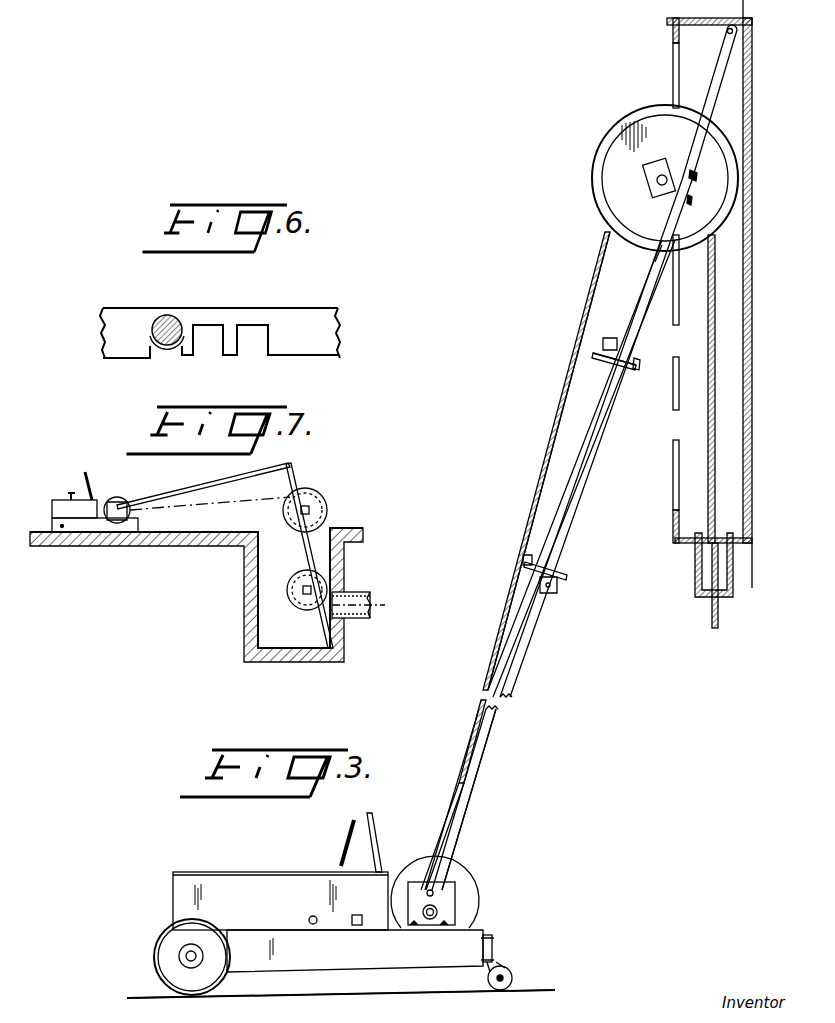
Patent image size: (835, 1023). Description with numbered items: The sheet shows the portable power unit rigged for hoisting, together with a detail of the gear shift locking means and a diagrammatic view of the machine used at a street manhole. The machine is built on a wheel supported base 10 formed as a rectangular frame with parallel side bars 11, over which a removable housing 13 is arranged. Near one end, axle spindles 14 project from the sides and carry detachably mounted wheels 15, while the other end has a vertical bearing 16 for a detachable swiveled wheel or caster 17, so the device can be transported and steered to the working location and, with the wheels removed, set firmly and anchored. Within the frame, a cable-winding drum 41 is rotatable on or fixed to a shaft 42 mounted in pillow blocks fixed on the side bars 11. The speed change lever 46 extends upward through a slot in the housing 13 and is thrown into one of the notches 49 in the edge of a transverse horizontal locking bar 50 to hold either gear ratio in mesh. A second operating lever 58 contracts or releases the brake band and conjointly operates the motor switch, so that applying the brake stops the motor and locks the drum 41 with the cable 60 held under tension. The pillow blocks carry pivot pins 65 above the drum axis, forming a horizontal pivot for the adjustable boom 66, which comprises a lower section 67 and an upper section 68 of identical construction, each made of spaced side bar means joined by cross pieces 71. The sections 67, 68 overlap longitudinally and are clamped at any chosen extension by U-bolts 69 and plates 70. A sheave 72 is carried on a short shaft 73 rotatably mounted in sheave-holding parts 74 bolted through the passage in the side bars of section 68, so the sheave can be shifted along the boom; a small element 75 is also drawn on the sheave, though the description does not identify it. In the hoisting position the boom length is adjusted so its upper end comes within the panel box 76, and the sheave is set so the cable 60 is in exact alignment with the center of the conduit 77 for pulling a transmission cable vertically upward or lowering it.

In FIG. 3, the wheel supported base 10 is at (345, 972).
In FIG. 3, the side bars 11 is at (418, 965).
In FIG. 3, the removable housing 13 is at (220, 880).
In FIG. 3, the axle spindles 14 is at (189, 955).
In FIG. 3, the wheels 15 is at (170, 968).
In FIG. 3, the vertical bearing 16 is at (492, 936).
In FIG. 3, the swiveled wheel or caster 17 is at (513, 972).
In FIG. 3, the cable-winding drum 41 is at (457, 872).
In FIG. 3, the shaft 42 is at (438, 912).
In FIG. 6, the operating lever 46 is at (158, 318).
In FIG. 3, the operating lever 46 is at (345, 840).
In FIG. 6, the notches 49 is at (253, 335).
In FIG. 6, the locking bar 50 is at (337, 338).
In FIG. 3, the operating lever 58 is at (381, 822).
In FIG. 3, the cable 60 is at (709, 424).
In FIG. 3, the pivot pins 65 is at (432, 893).
In FIG. 3, the adjustable boom 66 is at (578, 411).
In FIG. 3, the lower boom section 67 is at (513, 672).
In FIG. 3, the upper boom section 68 is at (657, 277).
In FIG. 3, the U-bolts or clips 69 is at (594, 352).
In FIG. 3, the plates 70 is at (636, 360).
In FIG. 3, the cross pieces 71 is at (730, 33).
In FIG. 3, the sheave 72 is at (622, 146).
In FIG. 3, the short shaft 73 is at (656, 180).
In FIG. 3, the sheave-holding parts 74 is at (673, 158).
In FIG. 3, the lug 75 is at (695, 180).
In FIG. 3, the panel box 76 is at (751, 380).
In FIG. 3, the conduit 77 is at (699, 572).